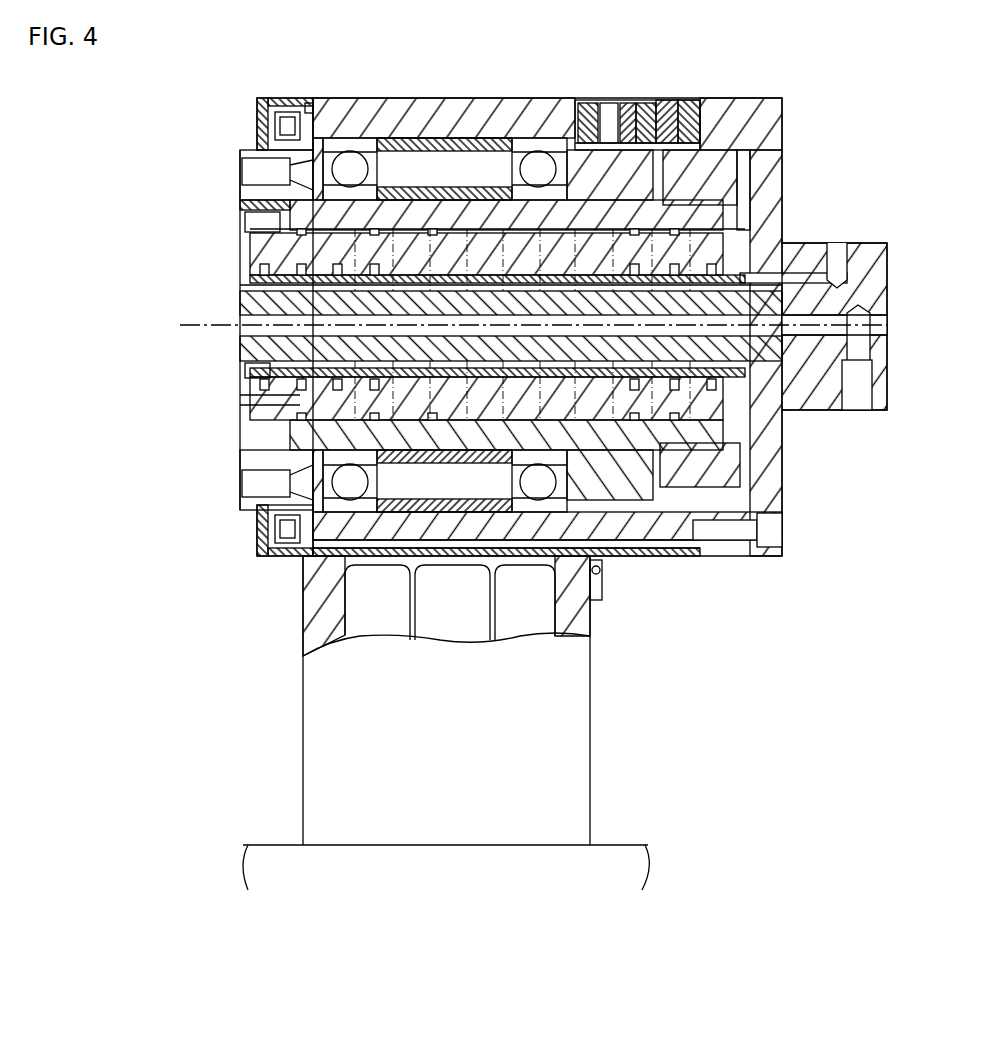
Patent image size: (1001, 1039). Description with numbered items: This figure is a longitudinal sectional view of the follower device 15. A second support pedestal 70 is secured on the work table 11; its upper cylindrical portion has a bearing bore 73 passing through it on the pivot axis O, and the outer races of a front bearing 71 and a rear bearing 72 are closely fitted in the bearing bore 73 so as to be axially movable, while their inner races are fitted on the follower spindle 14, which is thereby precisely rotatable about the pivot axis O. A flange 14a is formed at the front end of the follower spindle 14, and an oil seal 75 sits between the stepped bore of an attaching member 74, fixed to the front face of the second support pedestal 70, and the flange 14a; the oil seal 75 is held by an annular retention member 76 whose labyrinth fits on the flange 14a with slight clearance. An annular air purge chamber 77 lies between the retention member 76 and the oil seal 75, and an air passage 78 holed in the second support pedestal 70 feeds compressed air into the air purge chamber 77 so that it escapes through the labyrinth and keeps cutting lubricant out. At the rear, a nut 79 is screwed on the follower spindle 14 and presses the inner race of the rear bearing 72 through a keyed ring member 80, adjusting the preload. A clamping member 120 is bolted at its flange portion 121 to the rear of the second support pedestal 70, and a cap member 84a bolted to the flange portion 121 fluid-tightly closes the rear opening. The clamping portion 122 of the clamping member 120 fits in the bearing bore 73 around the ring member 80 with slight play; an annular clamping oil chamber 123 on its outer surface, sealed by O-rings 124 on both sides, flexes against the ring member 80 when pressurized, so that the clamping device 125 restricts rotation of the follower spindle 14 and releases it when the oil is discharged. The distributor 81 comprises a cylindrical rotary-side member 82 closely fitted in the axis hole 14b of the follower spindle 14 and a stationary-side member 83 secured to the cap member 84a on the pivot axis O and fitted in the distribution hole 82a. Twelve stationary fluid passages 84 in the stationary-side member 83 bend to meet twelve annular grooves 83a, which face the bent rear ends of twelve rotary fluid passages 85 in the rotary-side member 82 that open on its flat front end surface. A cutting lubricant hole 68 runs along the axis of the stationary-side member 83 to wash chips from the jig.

The work table 11 is at (618, 855).
The follower spindle 14 is at (472, 112).
The flange 14a is at (245, 190).
The axis hole 14b is at (305, 463).
The follower device 15 is at (400, 94).
The cutting lubricant hole 68 is at (305, 318).
The second support pedestal 70 is at (457, 105).
The front bearing 71 is at (358, 148).
The rear bearing 72 is at (530, 140).
The bearing bore 73 is at (437, 148).
The attaching member 74 is at (286, 97).
The oil seal 75 is at (270, 130).
The retention member 76 is at (260, 102).
The air purge chamber 77 is at (280, 522).
The air passage 78 is at (600, 578).
The nut 79 is at (735, 185).
The ring member 80 is at (620, 556).
The distributor 81 is at (798, 230).
The rotary-side member 82 is at (345, 418).
The distribution hole 82a is at (280, 346).
The stationary-side member 83 is at (770, 380).
The annular grooves 83a is at (250, 226).
The stationary fluid passages 84 is at (290, 262).
The cap member 84a is at (775, 150).
The rotary fluid passages 85 is at (292, 400).
The clamping member 120 is at (700, 100).
The flange portion 121 is at (672, 120).
The clamping portion 122 is at (638, 148).
The clamping oil chamber 123 is at (605, 148).
The O-rings 124 is at (580, 140).
The clamping device 125 is at (622, 92).
The pivot axis O is at (508, 325).